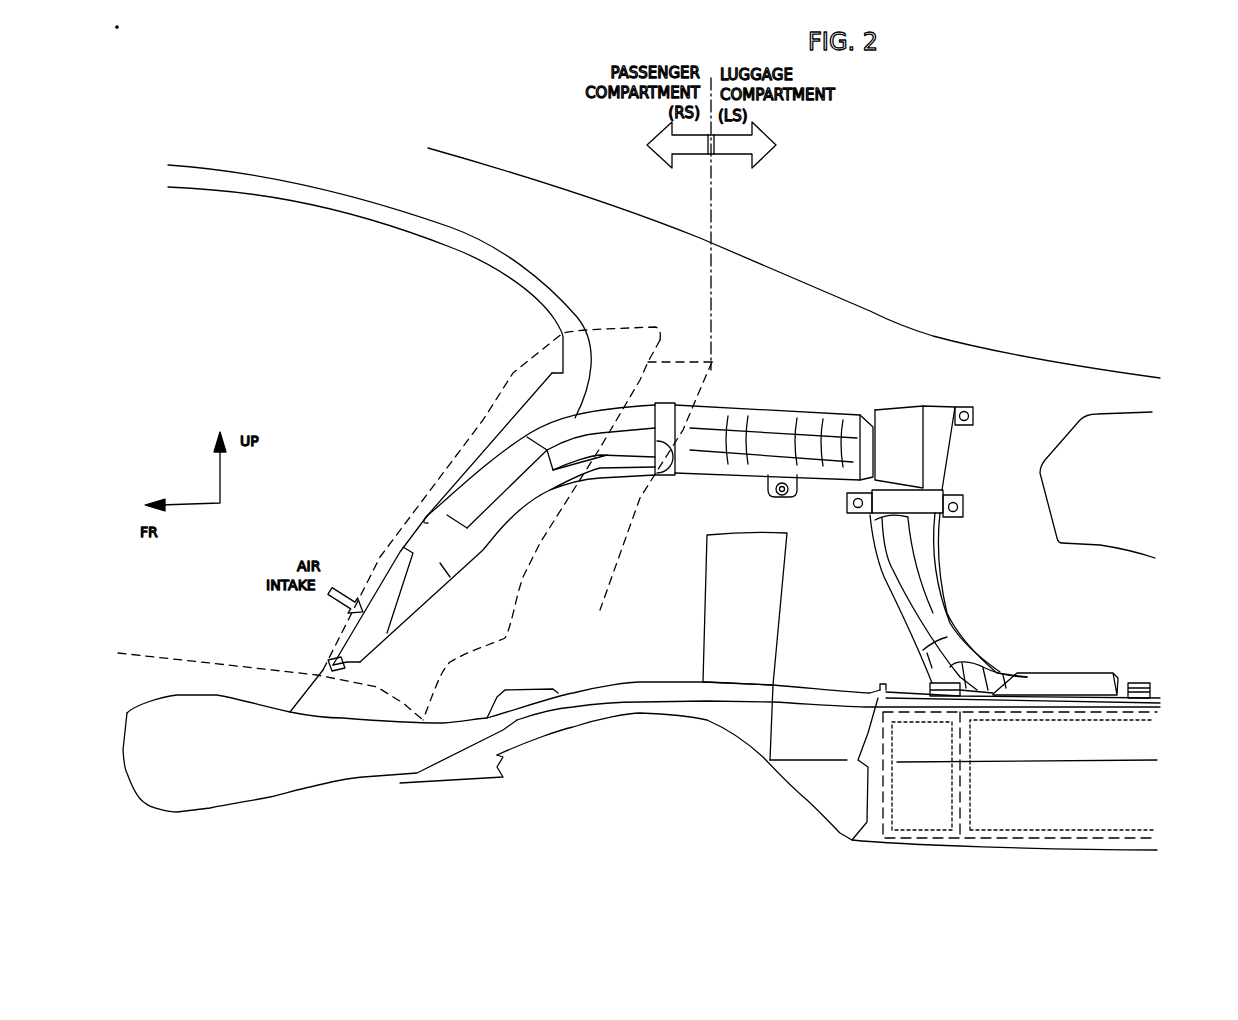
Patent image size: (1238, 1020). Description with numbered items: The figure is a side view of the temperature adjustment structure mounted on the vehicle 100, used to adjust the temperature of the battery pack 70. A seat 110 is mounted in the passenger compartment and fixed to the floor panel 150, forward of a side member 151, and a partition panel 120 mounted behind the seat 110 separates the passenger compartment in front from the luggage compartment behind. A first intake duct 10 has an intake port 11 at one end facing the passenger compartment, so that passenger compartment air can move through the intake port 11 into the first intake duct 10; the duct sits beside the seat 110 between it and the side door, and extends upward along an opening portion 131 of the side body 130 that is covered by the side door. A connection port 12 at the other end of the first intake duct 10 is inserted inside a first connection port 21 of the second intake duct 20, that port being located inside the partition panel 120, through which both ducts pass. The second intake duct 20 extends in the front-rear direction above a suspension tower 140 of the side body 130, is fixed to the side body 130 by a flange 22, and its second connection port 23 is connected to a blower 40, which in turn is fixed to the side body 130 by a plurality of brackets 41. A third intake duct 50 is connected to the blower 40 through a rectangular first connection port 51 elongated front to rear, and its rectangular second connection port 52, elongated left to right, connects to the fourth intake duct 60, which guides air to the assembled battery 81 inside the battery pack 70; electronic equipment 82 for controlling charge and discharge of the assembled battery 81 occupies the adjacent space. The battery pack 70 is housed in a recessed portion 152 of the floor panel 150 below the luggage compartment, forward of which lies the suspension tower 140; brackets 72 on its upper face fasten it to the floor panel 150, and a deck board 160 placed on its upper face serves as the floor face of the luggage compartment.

The vehicle 100 is at (464, 115).
The first intake duct 10 is at (461, 538).
The intake port 11 is at (338, 655).
The connection port 12 is at (640, 456).
The second intake duct 20 is at (764, 432).
The first connection port 21 is at (673, 479).
The flange 22 is at (776, 477).
The second connection port 23 is at (868, 437).
The blower 40 is at (918, 436).
The brackets 41 is at (975, 416).
The third intake duct 50 is at (937, 603).
The first connection port 51 is at (908, 519).
The second connection port 52 is at (977, 656).
The fourth intake duct 60 is at (1061, 668).
The battery pack 70 is at (1020, 807).
The brackets 72 is at (928, 688).
The assembled battery 81 is at (1065, 794).
The electronic equipment 82 is at (931, 794).
The seat 110 is at (488, 400).
The partition panel 120 is at (684, 352).
The side body 130 is at (772, 317).
The opening portion 131 is at (525, 403).
The suspension tower 140 is at (707, 556).
The floor panel 150 is at (641, 738).
The side member 151 is at (517, 700).
The recessed portion 152 is at (893, 706).
The deck board 160 is at (1152, 703).